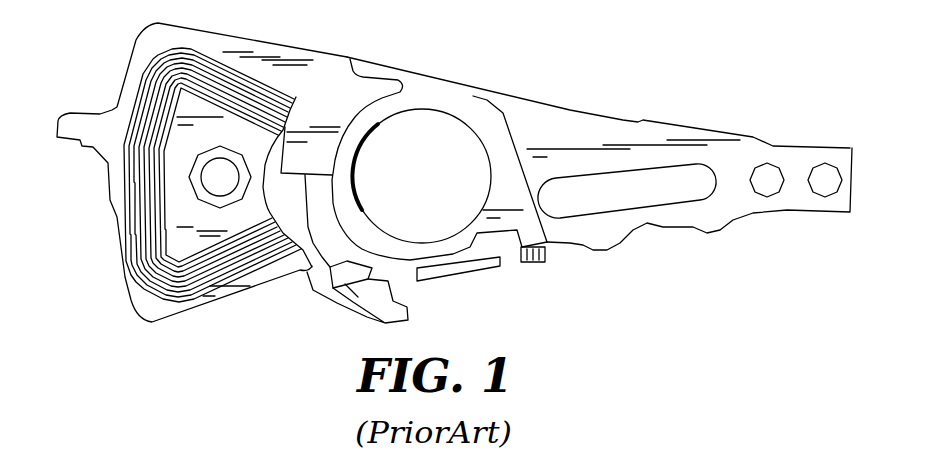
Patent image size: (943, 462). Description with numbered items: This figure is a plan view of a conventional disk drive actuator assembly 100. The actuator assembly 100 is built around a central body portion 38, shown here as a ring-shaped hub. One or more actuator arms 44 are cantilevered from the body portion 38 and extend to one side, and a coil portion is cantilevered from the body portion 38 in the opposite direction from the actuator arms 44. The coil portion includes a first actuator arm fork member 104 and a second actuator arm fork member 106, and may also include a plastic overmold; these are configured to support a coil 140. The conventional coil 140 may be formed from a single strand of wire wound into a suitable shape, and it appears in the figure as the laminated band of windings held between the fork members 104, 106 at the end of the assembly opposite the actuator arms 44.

The actuator assembly 100 is at (695, 93).
The second actuator arm fork member 106 is at (297, 64).
The body portion 38 is at (433, 93).
The coil 140 is at (182, 317).
The first actuator arm fork member 104 is at (273, 277).
The actuator arm 44 is at (647, 223).